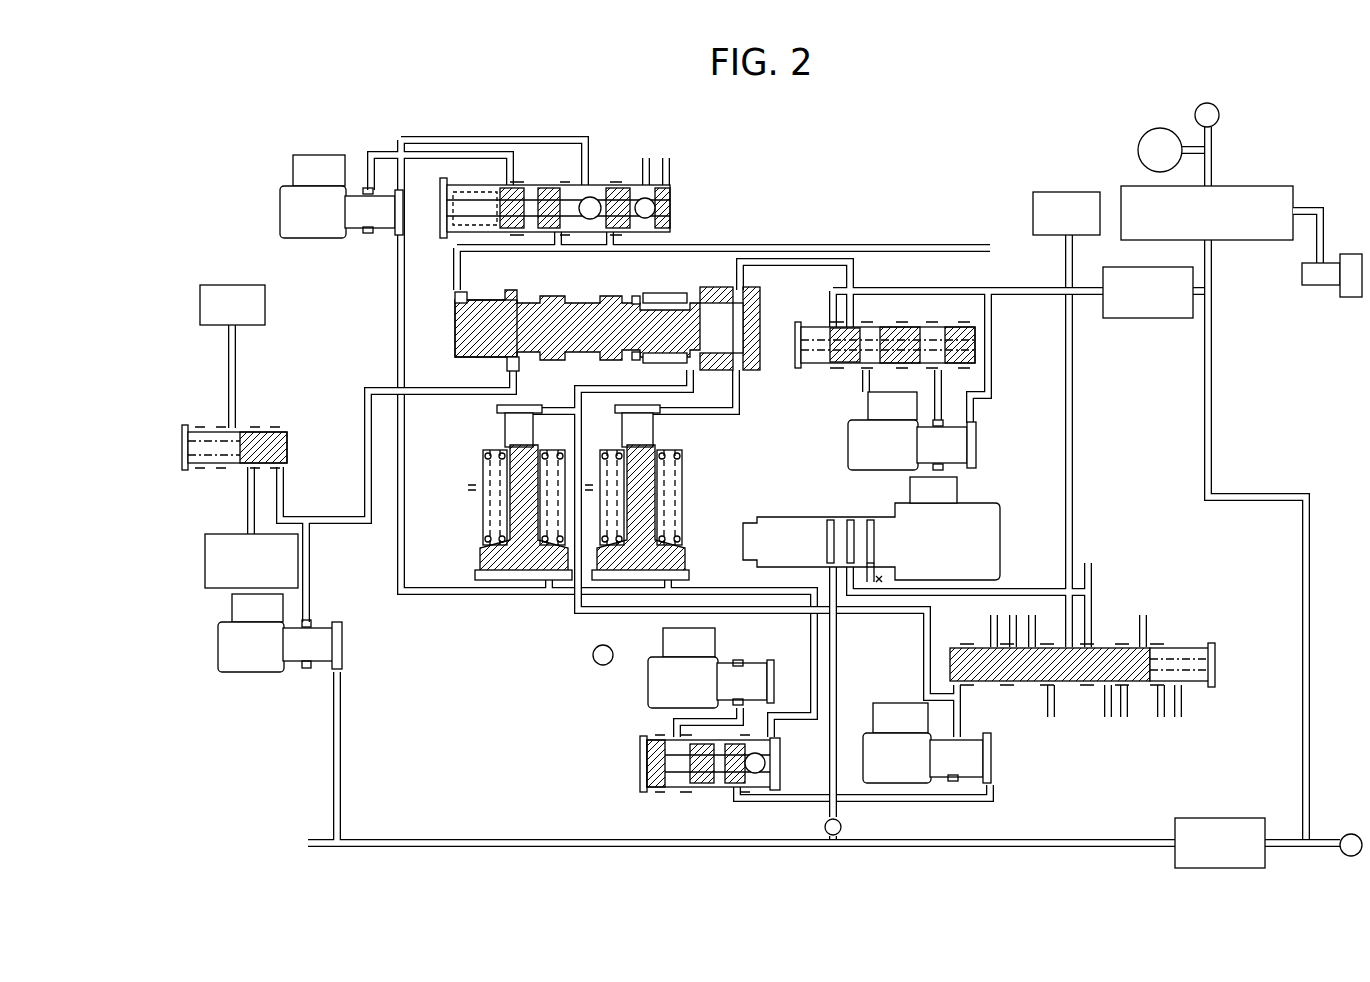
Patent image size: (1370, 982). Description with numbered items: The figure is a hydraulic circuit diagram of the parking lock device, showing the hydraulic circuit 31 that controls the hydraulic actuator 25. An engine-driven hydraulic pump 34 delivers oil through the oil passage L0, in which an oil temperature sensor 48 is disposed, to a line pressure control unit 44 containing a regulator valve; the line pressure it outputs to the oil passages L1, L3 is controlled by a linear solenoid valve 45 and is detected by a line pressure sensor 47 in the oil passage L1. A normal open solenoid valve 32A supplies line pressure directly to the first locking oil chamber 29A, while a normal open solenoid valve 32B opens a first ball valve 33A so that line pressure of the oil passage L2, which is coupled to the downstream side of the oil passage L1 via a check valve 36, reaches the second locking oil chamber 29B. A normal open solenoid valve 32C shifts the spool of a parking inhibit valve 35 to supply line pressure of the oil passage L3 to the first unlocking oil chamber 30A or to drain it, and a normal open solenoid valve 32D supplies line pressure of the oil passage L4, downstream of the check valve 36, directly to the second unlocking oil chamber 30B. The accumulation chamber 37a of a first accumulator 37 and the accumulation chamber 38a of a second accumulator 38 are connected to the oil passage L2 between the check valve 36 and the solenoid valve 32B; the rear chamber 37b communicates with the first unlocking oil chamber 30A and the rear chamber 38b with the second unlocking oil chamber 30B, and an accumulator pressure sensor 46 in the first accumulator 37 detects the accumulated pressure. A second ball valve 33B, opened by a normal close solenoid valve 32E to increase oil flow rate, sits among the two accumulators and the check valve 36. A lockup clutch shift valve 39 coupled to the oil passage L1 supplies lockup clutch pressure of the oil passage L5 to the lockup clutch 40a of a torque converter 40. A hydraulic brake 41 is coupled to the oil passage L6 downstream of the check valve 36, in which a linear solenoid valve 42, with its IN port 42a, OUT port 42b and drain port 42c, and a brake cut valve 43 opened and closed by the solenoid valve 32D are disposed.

The hydraulic actuator 25 is at (586, 317).
The first locking oil chamber 29A is at (506, 370).
The second locking oil chamber 29B is at (455, 298).
The first unlocking oil chamber 30A is at (714, 308).
The second unlocking oil chamber 30B is at (665, 298).
The hydraulic circuit 31 is at (958, 204).
The solenoid valve 32A is at (218, 652).
The solenoid valve 32B is at (280, 216).
The solenoid valve 32C is at (848, 436).
The solenoid valve 32D is at (905, 786).
The solenoid valve 32E is at (648, 686).
The first ball valve 33A is at (614, 176).
The second ball valve 33B is at (630, 750).
The hydraulic pump 34 is at (1150, 136).
The parking inhibit valve 35 is at (838, 375).
The check valve 36 is at (842, 828).
The first accumulator 37 is at (668, 497).
The accumulation chamber 37a is at (684, 574).
The rear chamber 37b is at (650, 426).
The second accumulator 38 is at (494, 492).
The accumulation chamber 38a is at (476, 574).
The rear chamber 38b is at (510, 428).
The lockup clutch shift valve 39 is at (262, 418).
The torque converter 40 is at (222, 272).
The lockup clutch 40a is at (236, 286).
The hydraulic brake 41 is at (1086, 192).
The linear solenoid valve 42 is at (871, 513).
The IN port 42a is at (826, 538).
The OUT port 42b is at (850, 520).
The drain port 42c is at (871, 520).
The brake cut valve 43 is at (1110, 632).
The line pressure control unit 44 is at (1280, 186).
The linear solenoid valve 45 is at (1352, 258).
The accumulator pressure sensor 46 is at (593, 656).
The line pressure sensor 47 is at (1350, 833).
The oil temperature sensor 48 is at (1207, 106).
The oil passage L0 is at (1212, 166).
The oil passage L1 is at (366, 430).
The oil passage L2 is at (492, 140).
The oil passage L3 is at (789, 266).
The oil passage L4 is at (582, 432).
The oil passage L5 is at (230, 390).
The oil passage L6 is at (1073, 406).